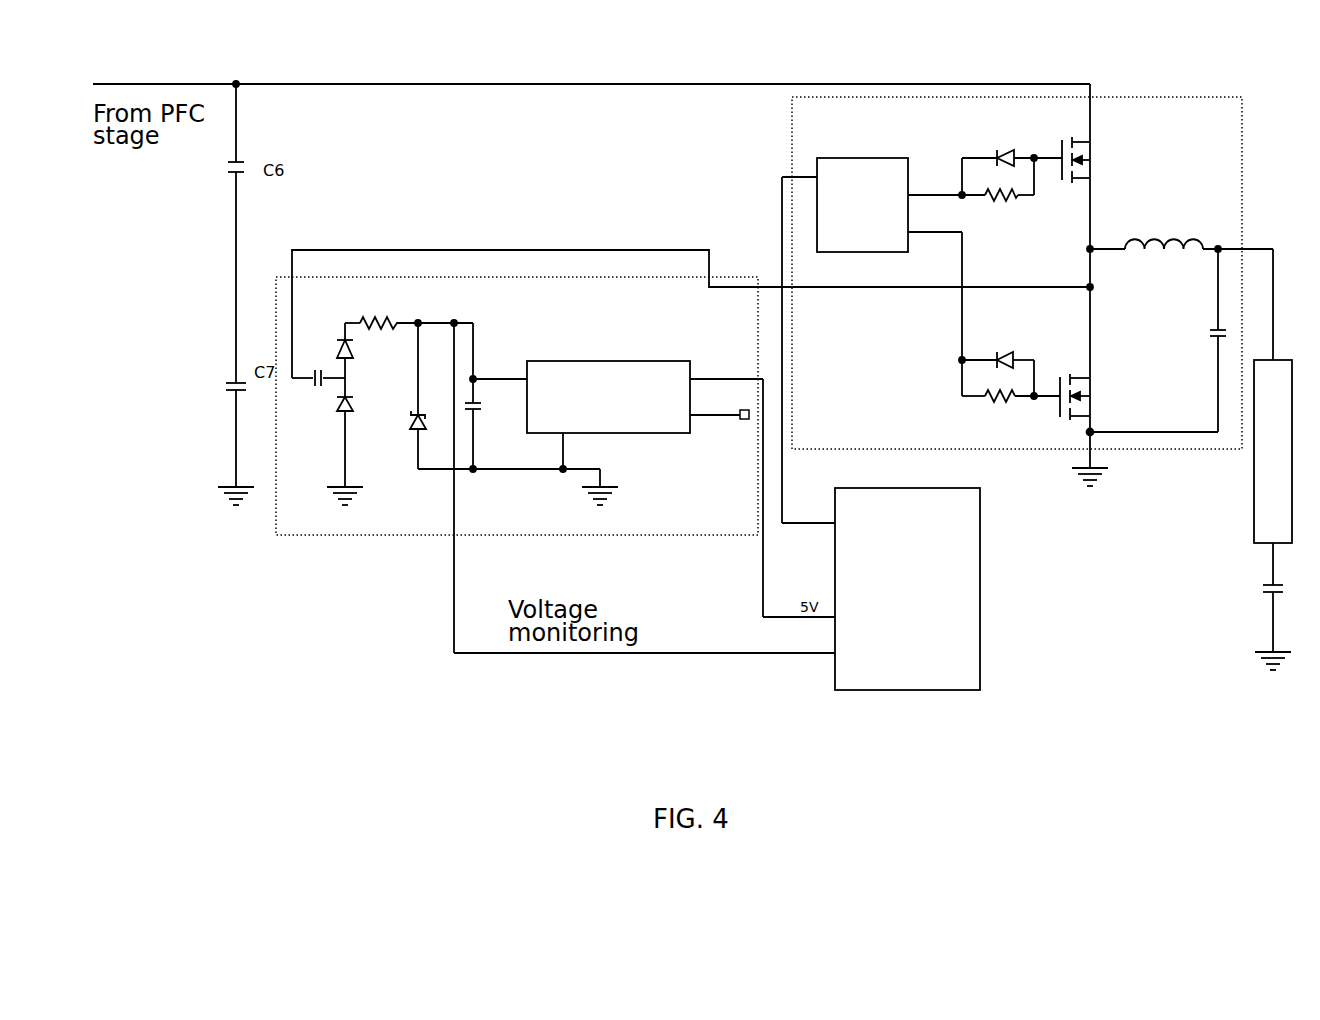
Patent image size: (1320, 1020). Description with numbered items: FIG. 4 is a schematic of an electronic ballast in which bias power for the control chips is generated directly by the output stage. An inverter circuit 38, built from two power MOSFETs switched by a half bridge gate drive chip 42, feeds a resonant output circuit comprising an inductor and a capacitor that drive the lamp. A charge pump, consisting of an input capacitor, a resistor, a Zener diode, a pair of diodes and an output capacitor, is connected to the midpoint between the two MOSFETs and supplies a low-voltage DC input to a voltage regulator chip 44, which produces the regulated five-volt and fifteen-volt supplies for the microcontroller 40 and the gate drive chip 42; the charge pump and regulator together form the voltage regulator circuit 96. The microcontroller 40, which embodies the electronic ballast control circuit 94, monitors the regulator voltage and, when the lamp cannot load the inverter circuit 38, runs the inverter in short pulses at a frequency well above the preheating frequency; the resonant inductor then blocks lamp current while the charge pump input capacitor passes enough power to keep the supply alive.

The inverter circuit 38 is at (953, 98).
The microcontroller 40 is at (980, 565).
The half bridge gate drive chip 42 is at (815, 170).
The voltage regulator chip 44 is at (635, 433).
The electronic ballast control circuit 94 is at (907, 589).
The voltage regulator 96 is at (443, 277).